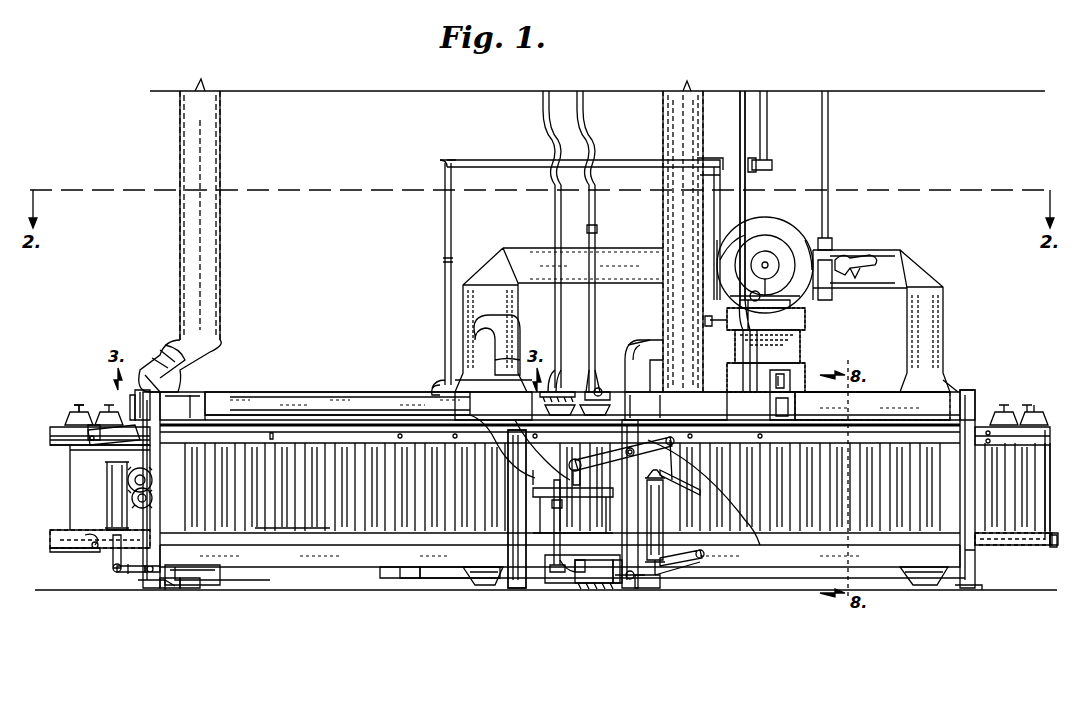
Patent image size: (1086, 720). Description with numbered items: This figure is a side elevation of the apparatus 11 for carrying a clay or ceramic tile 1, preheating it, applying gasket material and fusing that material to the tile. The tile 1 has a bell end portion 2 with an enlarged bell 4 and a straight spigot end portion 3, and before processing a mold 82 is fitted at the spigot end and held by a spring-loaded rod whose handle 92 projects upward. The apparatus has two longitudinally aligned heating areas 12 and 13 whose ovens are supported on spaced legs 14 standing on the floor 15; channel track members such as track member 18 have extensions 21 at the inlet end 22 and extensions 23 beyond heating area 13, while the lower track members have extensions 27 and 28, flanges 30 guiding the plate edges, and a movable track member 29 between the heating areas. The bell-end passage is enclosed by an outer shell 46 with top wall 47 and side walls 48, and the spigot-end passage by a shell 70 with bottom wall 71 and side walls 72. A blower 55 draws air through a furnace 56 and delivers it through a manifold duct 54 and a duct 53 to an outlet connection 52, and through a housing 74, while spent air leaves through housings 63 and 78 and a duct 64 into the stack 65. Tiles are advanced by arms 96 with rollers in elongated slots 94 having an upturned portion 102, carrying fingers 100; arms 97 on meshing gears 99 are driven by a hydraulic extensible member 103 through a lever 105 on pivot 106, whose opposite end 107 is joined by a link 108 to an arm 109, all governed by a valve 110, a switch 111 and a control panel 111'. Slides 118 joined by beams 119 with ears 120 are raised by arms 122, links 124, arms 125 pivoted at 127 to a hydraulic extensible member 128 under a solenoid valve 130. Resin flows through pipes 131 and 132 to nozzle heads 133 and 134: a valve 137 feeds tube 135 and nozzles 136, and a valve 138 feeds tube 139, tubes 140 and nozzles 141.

The tubular clay or ceramic tile 1 is at (75, 476).
The end portion 2 is at (66, 420).
The end portion 3 is at (1056, 532).
The enlarged bell 4 is at (1005, 410).
The apparatus 11 is at (957, 378).
The heating area 12 is at (296, 392).
The heating area 13 is at (875, 400).
The legs 14 is at (152, 580).
The floor 15 is at (517, 590).
The track member 18 is at (58, 443).
The extensions 21 is at (50, 432).
The inlet end 22 is at (132, 392).
The extensions 23 is at (1040, 427).
The extensions 27 is at (50, 534).
The extensions 28 is at (1040, 547).
The movable track member 29 is at (588, 533).
The flanges 30 is at (60, 532).
The outer shell 46 is at (366, 395).
The top wall 47 is at (442, 386).
The side walls 48 is at (322, 394).
The outlet connection 52 is at (518, 384).
The duct 53 is at (520, 334).
The manifold duct 54 is at (503, 250).
The blower 55 is at (765, 228).
The furnace 56 is at (806, 335).
The housing 63 is at (190, 388).
The duct 64 is at (152, 348).
The stack 65 is at (220, 239).
The shell 70 is at (327, 552).
The bottom wall 71 is at (418, 557).
The side walls 72 is at (378, 560).
The housing 74 is at (487, 580).
The housing 78 is at (220, 576).
The mold 82 is at (1055, 548).
The handle 92 is at (77, 405).
The elongated slots 94 is at (90, 545).
The arms 96 is at (112, 430).
The arms 97 is at (172, 586).
The meshing gears 99 is at (125, 485).
The fingers 100 is at (112, 548).
The upturned portion 102 is at (80, 440).
The hydraulic extensible member 103 is at (112, 502).
The lever 105 is at (126, 575).
The pivot 106 is at (148, 574).
The opposite end 107 is at (200, 582).
The link 108 is at (190, 540).
The arm 109 is at (160, 475).
The valve 110 is at (140, 388).
The switch 111 is at (676, 380).
The electric control panel 111' is at (807, 386).
The slides 118 is at (538, 515).
The beams 119 is at (535, 478).
The ears 120 is at (560, 475).
The arms 122 is at (608, 372).
The links 124 is at (690, 495).
The arms 125 is at (665, 590).
The pivot 127 is at (672, 580).
The hydraulic extensible member 128 is at (675, 485).
The solenoid valve 130 is at (670, 540).
The pipe 131 is at (600, 232).
The pipe 132 is at (558, 236).
The nozzle head 133 is at (566, 392).
The nozzle head 134 is at (585, 590).
The tube 135 is at (562, 372).
The nozzles 136 is at (582, 395).
The valve 137 is at (597, 372).
The valve 138 is at (565, 570).
The tube 139 is at (578, 580).
The tubes 140 is at (618, 590).
The nozzles 141 is at (598, 590).